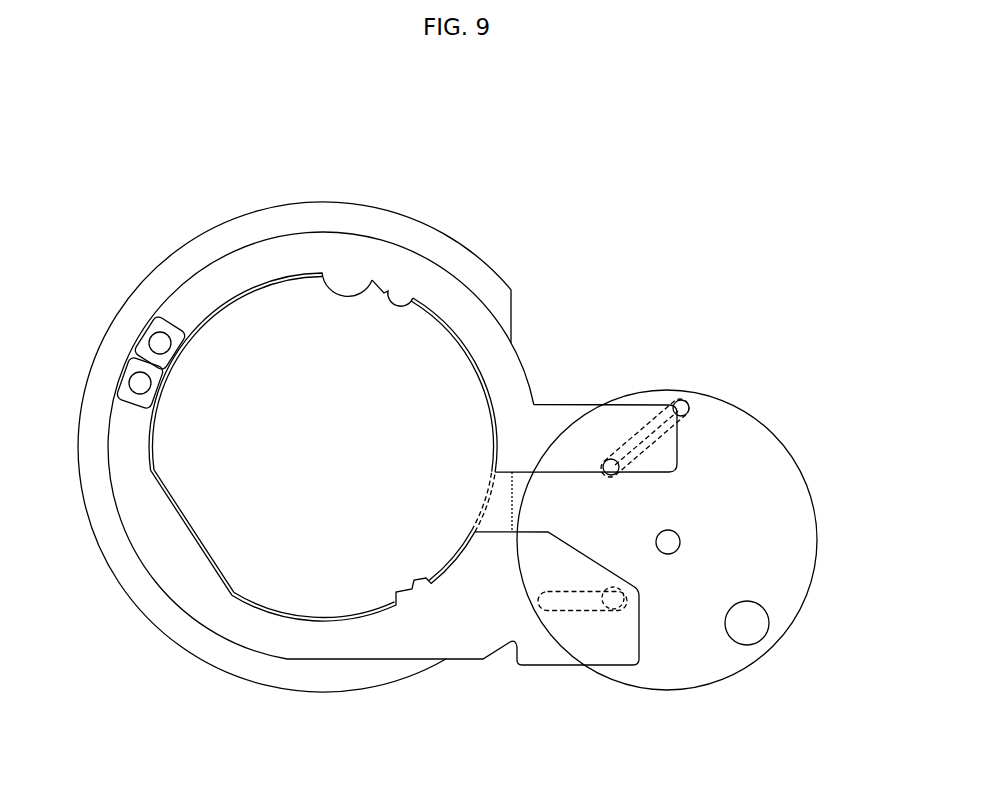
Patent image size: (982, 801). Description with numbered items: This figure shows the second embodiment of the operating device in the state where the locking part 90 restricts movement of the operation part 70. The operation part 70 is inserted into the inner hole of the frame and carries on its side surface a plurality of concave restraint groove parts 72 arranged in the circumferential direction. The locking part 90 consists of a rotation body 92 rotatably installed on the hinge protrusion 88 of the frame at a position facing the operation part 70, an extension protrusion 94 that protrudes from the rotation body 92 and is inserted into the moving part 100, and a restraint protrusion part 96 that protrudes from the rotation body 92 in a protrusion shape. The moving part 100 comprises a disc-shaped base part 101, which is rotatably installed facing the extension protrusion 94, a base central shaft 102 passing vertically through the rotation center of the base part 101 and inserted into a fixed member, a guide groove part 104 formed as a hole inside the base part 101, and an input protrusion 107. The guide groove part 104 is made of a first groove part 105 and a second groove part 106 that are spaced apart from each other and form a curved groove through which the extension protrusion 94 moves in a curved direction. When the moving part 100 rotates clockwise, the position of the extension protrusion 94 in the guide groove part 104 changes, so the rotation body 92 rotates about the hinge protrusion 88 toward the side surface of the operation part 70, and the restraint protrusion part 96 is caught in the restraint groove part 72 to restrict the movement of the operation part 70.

The operation part 70 is at (253, 335).
The restraint groove part 72 is at (322, 273).
The hinge protrusion 88 is at (160, 343).
The locking part 90 is at (457, 257).
The rotation body 92 is at (343, 255).
The extension protrusion 94 is at (612, 405).
The restraint protrusion part 96 is at (411, 292).
The moving part 100 is at (800, 425).
The base part 101 is at (785, 473).
The base central shaft 102 is at (681, 542).
The guide groove part 104 is at (690, 407).
The first groove part 105 is at (573, 611).
The second groove part 106 is at (692, 422).
The input protrusion 107 is at (769, 618).